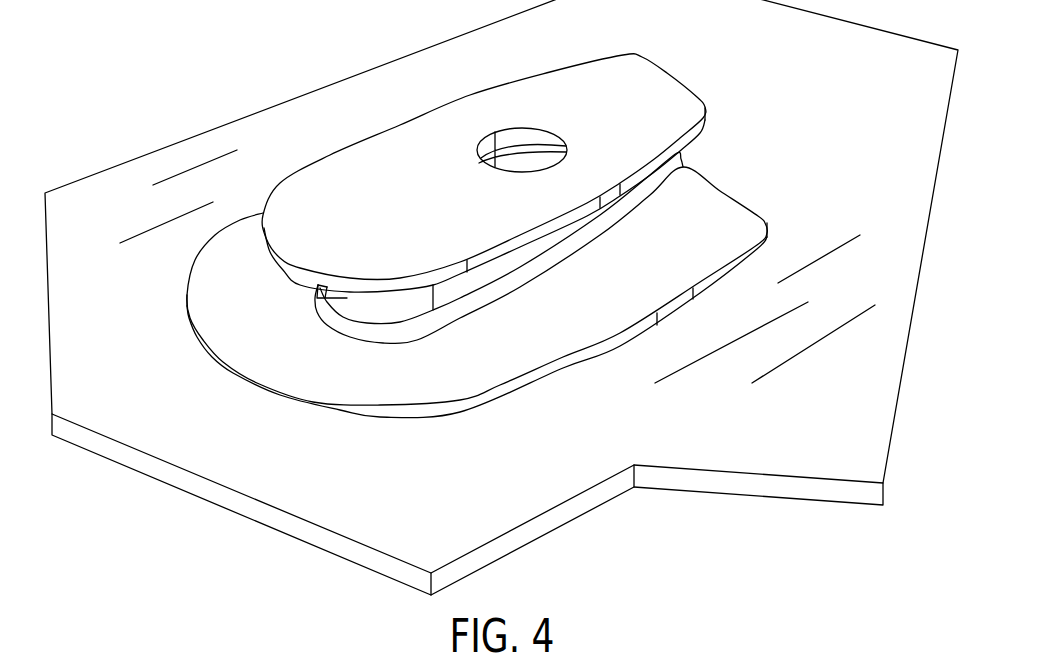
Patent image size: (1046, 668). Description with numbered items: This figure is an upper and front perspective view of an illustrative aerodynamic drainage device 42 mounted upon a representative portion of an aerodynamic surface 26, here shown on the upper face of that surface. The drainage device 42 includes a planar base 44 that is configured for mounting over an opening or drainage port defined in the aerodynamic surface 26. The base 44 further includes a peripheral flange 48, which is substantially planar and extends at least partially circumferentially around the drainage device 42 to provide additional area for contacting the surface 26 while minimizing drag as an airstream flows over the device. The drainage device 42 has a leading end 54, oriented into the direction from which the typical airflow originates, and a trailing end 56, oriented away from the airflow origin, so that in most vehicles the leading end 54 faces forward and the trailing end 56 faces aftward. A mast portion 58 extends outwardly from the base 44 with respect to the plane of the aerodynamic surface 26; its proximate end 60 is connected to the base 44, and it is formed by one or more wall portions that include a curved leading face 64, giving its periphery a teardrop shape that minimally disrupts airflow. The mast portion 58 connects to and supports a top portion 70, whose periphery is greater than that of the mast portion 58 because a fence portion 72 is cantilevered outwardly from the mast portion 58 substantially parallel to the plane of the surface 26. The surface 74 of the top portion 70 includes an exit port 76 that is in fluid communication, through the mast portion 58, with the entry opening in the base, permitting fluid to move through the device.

The aerodynamic surface 26 is at (501, 297).
The drainage device 42 is at (501, 297).
The planar base 44 is at (450, 327).
The peripheral flange 48 is at (433, 418).
The leading end 54 is at (165, 442).
The trailing end 56 is at (823, 115).
The mast portion 58 is at (510, 260).
The proximate end 60 is at (400, 333).
The curved leading face 64 is at (327, 297).
The top portion 70 is at (484, 160).
The fence portion 72 is at (484, 160).
The surface 74 is at (352, 253).
The exit port 76 is at (522, 133).